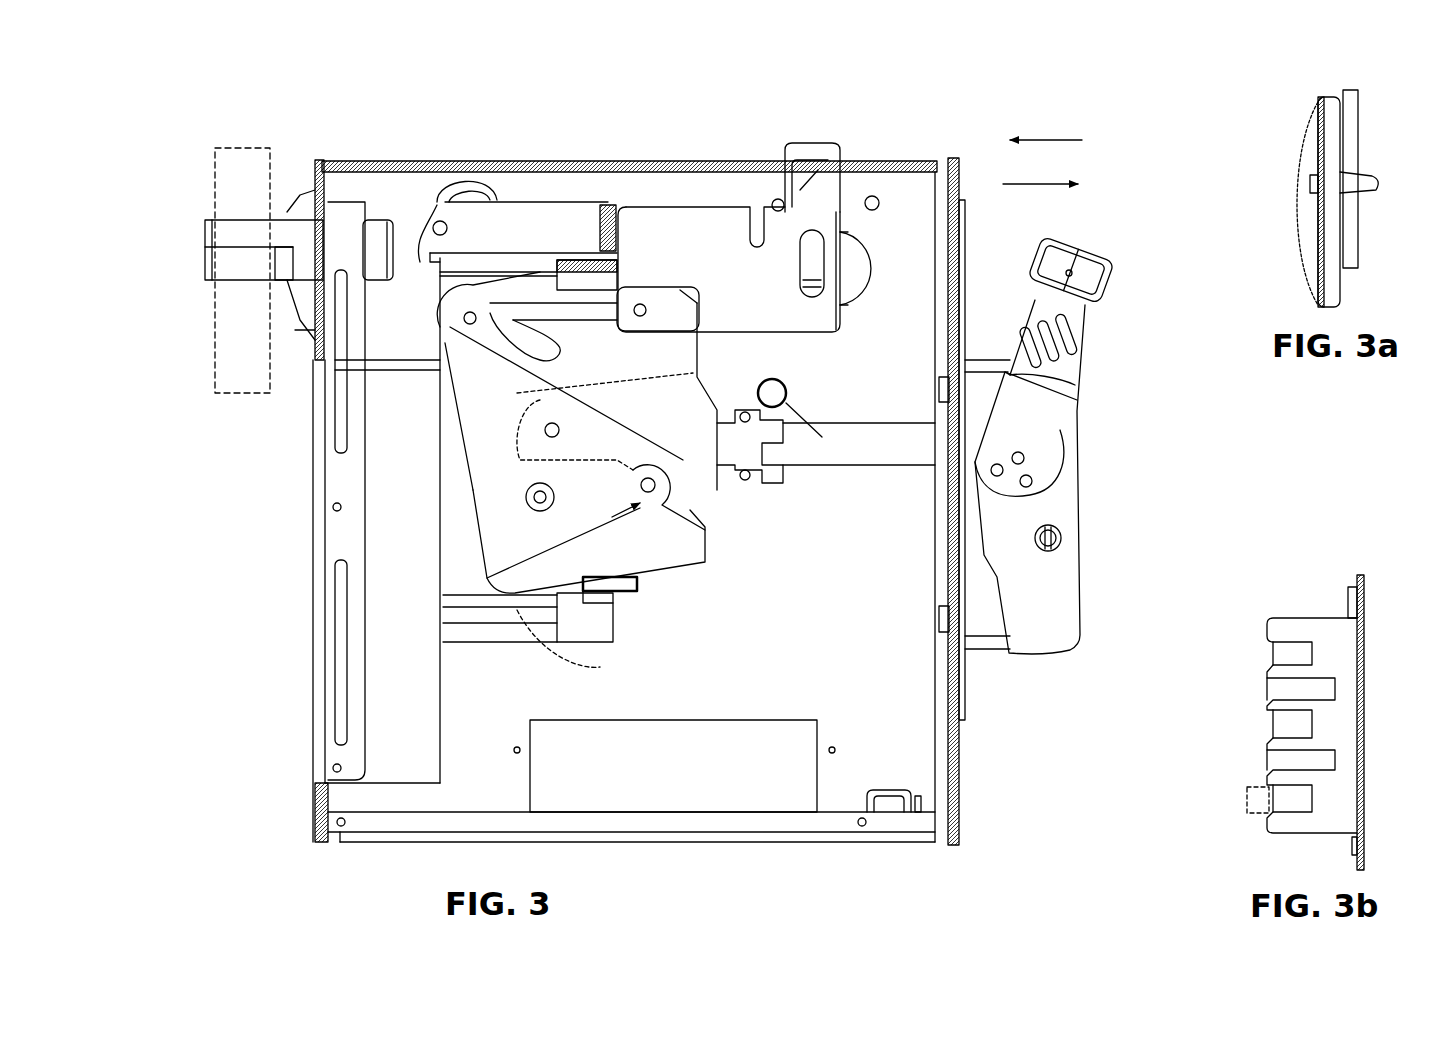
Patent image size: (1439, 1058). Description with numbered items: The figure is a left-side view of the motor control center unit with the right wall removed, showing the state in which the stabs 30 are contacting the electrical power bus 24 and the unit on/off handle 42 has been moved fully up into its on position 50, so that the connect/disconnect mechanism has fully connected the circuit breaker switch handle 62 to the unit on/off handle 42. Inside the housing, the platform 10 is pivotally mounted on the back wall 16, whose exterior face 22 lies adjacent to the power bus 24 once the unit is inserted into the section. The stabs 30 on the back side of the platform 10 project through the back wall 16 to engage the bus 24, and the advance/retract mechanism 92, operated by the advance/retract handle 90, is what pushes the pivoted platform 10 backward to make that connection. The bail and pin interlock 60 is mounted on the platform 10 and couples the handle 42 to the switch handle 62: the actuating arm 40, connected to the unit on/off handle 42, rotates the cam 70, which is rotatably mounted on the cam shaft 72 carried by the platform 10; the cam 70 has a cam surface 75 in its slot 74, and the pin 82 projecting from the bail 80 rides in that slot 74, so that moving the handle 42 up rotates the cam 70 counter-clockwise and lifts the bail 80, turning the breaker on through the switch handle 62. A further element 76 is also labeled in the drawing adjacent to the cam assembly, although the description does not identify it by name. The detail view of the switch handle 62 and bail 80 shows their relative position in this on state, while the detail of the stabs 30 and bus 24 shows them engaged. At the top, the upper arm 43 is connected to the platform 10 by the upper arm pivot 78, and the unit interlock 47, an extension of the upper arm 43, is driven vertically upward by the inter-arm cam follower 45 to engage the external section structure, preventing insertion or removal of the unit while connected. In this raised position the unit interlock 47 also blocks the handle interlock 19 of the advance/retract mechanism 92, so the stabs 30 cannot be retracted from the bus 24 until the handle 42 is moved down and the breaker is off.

In FIG. 3, the platform 10 is at (410, 483).
In FIG. 3, the back wall 16 is at (318, 800).
In FIG. 3, the handle interlock 19 is at (812, 192).
In FIG. 3, the exterior face 22 is at (262, 797).
In FIG. 3, the electrical power bus 24 is at (210, 150).
In FIG. 3b, the electrical power bus 24 is at (1247, 786).
In FIG. 3, the stabs 30 is at (385, 212).
In FIG. 3b, the stabs 30 is at (1292, 616).
In FIG. 3, the actuating arm 40 is at (728, 470).
In FIG. 3, the unit on/off handle 42 is at (1116, 287).
In FIG. 3, the upper arm 43 is at (715, 250).
In FIG. 3, the inter-arm cam follower 45 is at (645, 300).
In FIG. 3, the unit interlock 47 is at (810, 195).
In FIG. 3, the on position 50 is at (1135, 232).
In FIG. 3, the bail and pin interlock 60 is at (583, 640).
In FIG. 3, the switch handle 62 is at (713, 392).
In FIG. 3a, the switch handle 62 is at (1372, 186).
In FIG. 3, the cam 70 is at (500, 513).
In FIG. 3, the cam shaft 72 is at (540, 478).
In FIG. 3, the slot 74 is at (540, 590).
In FIG. 3, the cam surface 75 is at (600, 632).
In FIG. 3, the latch plate 76 is at (553, 285).
In FIG. 3, the upper arm pivot 78 is at (438, 200).
In FIG. 3, the bail 80 is at (790, 450).
In FIG. 3a, the bail 80 is at (1352, 125).
In FIG. 3, the pin 82 is at (748, 455).
In FIG. 3, the advance/retract handle 90 is at (935, 446).
In FIG. 3, the advance/retract mechanism 92 is at (924, 160).